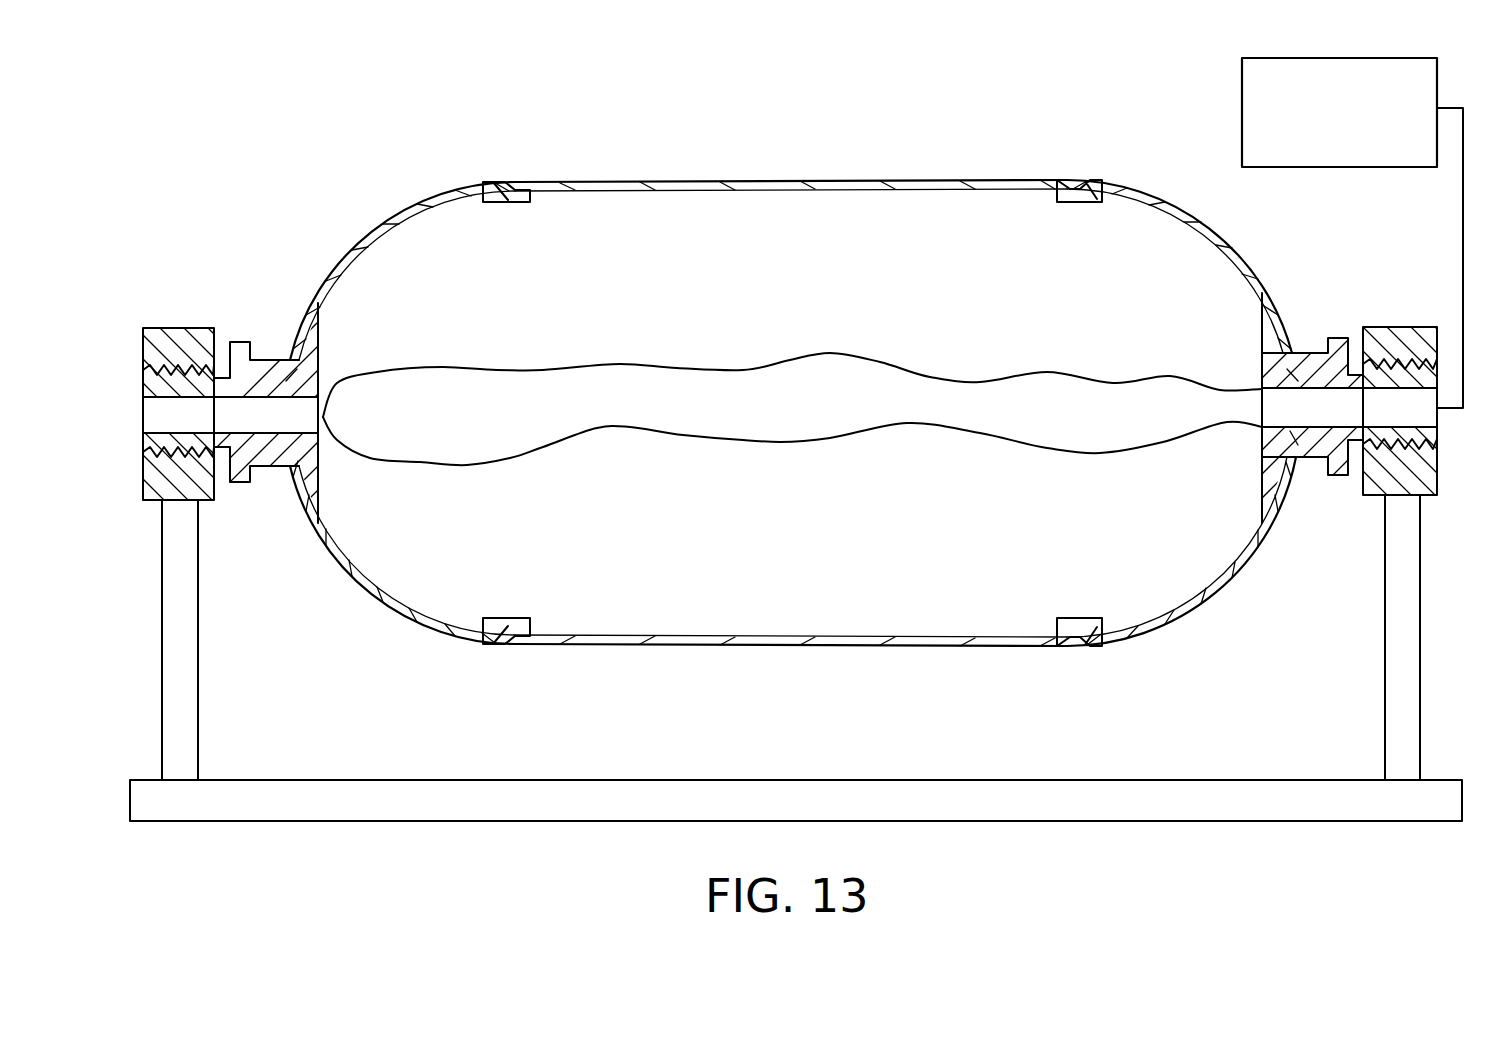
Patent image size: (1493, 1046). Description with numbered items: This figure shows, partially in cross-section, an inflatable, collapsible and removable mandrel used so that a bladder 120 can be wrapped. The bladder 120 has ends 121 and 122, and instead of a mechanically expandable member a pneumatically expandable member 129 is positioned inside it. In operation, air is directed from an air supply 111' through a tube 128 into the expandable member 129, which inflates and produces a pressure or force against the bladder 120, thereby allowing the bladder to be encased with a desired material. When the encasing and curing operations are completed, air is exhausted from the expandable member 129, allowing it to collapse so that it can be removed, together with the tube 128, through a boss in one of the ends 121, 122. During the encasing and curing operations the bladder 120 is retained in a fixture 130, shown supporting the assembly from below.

The bladder 120 is at (822, 180).
The end 121 is at (1262, 272).
The end 122 is at (330, 268).
The tube 128 is at (1463, 262).
The expandable member 129 is at (522, 430).
The fixture 130 is at (1352, 631).
The air supply 111' is at (1293, 112).